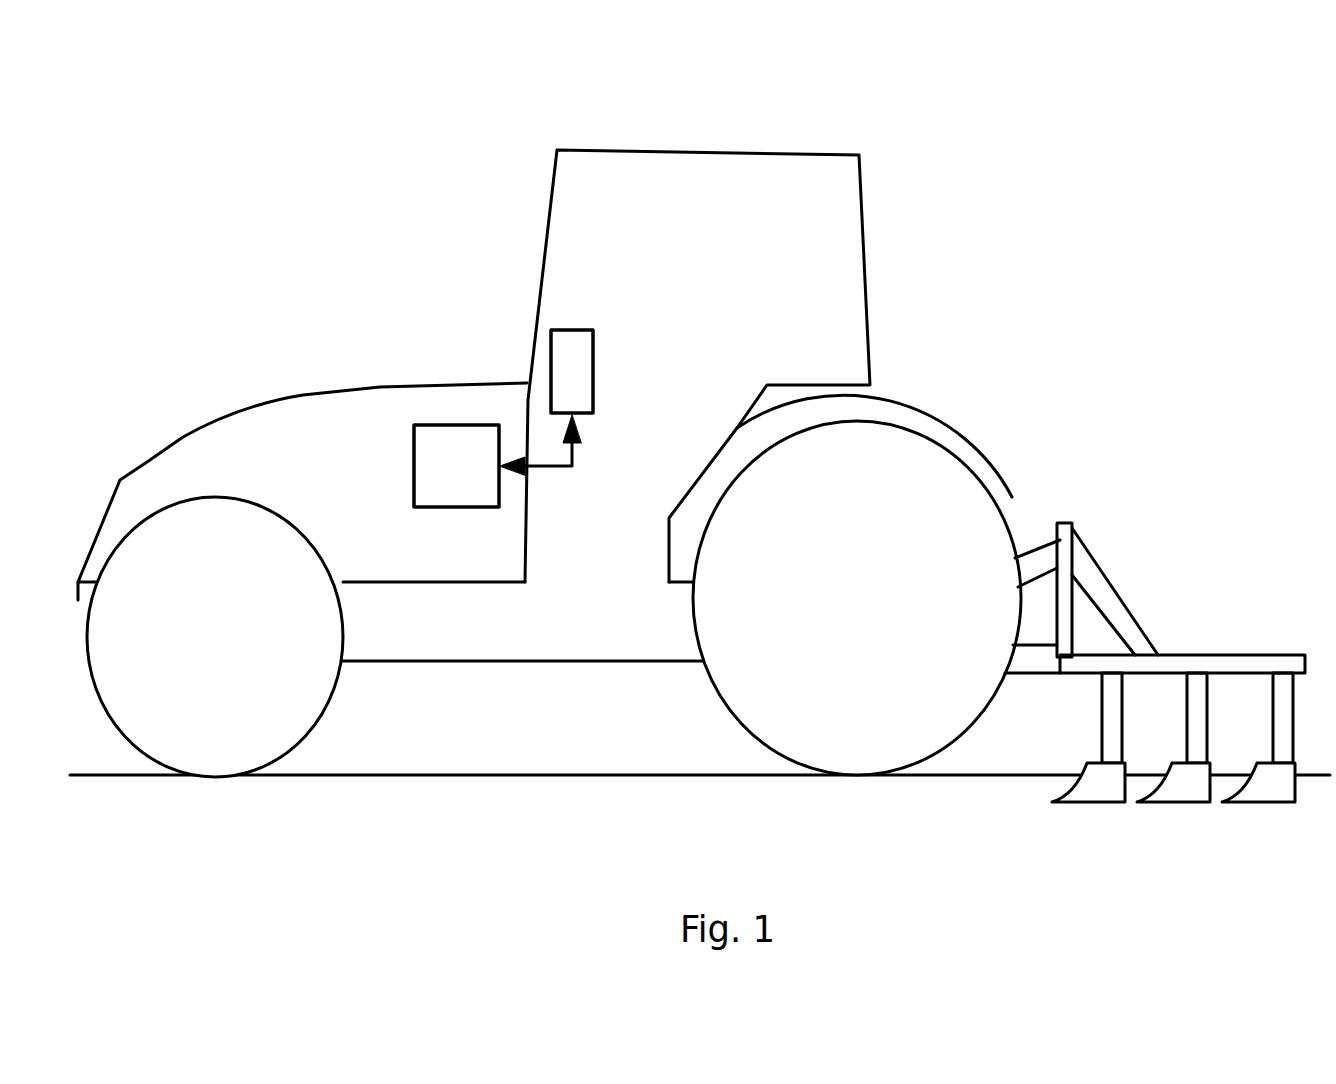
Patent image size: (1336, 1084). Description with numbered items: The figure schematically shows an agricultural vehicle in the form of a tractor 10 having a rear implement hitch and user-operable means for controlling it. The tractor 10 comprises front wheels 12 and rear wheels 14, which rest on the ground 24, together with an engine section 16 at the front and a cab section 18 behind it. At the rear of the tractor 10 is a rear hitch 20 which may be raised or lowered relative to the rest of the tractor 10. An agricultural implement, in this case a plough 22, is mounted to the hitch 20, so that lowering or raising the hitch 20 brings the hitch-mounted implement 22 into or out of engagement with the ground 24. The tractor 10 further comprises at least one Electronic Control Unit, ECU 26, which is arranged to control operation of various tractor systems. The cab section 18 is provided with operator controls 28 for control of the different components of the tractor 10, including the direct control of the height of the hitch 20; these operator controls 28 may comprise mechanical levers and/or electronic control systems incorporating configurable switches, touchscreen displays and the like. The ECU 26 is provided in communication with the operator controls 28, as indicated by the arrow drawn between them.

The tractor 10 is at (205, 115).
The front wheels 12 is at (263, 710).
The rear wheels 14 is at (827, 710).
The engine section 16 is at (290, 440).
The cab section 18 is at (837, 225).
The rear hitch 20 is at (1040, 540).
The plough 22 is at (1222, 650).
The ground 24 is at (1013, 780).
The Electronic Control Unit (ECU) 26 is at (455, 450).
The operator controls 28 is at (567, 360).